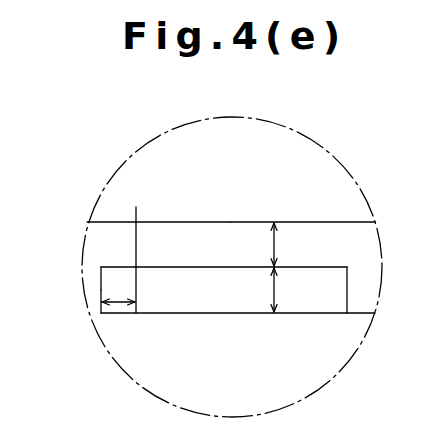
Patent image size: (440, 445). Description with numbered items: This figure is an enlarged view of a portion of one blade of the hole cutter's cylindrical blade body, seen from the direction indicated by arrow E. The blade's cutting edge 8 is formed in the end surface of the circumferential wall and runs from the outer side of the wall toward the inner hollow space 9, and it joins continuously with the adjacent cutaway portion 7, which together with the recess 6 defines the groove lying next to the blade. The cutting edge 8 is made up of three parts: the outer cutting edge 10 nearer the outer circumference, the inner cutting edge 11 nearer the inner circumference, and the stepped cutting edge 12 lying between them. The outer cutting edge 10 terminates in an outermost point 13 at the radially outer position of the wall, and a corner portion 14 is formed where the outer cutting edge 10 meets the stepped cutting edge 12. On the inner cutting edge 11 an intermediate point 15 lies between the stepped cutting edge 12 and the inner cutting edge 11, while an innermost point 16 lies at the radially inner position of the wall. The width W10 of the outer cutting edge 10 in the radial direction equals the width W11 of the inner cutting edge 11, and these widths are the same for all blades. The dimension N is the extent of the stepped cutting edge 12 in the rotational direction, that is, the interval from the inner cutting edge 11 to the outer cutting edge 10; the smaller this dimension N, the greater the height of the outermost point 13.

The recess 6 is at (234, 312).
The cutaway portion 7 is at (252, 230).
The cutting edge 8 is at (137, 237).
The inner hollow space 9 is at (230, 222).
The outer cutting edge 10 is at (101, 288).
The inner cutting edge 11 is at (137, 258).
The stepped cutting edge 12 is at (112, 267).
The outermost point 13 is at (101, 313).
The corner portion 14 is at (101, 267).
The intermediate point 15 is at (137, 270).
The innermost point 16 is at (136, 210).
The dimension of the stepped cutting edge N is at (119, 304).
The width of the inner cutting edge W11 is at (276, 243).
The width of the outer cutting edge W10 is at (276, 290).
The arrow E is at (335, 153).